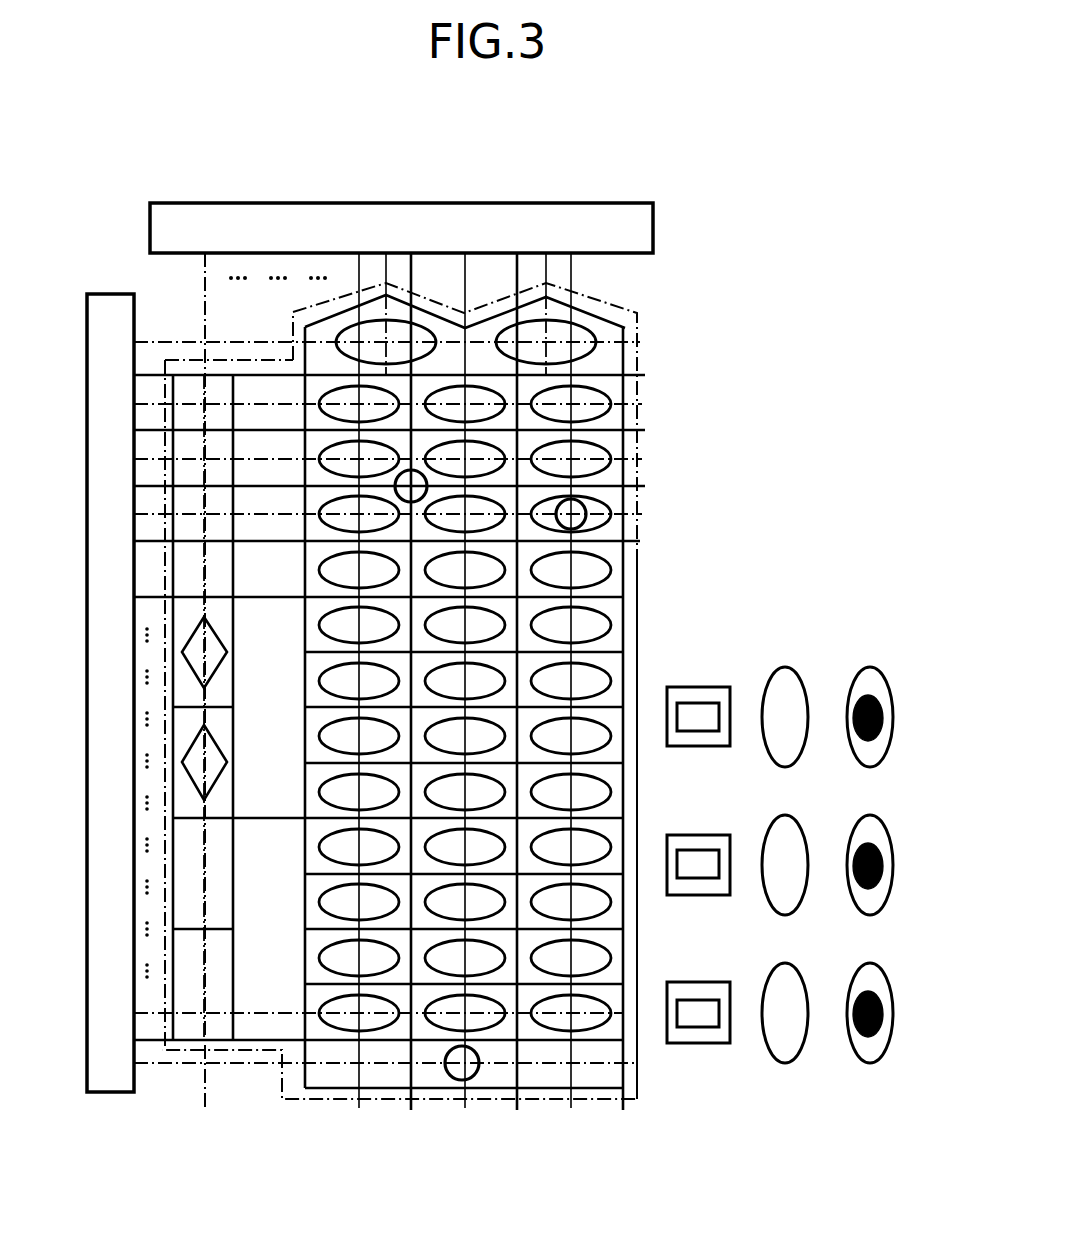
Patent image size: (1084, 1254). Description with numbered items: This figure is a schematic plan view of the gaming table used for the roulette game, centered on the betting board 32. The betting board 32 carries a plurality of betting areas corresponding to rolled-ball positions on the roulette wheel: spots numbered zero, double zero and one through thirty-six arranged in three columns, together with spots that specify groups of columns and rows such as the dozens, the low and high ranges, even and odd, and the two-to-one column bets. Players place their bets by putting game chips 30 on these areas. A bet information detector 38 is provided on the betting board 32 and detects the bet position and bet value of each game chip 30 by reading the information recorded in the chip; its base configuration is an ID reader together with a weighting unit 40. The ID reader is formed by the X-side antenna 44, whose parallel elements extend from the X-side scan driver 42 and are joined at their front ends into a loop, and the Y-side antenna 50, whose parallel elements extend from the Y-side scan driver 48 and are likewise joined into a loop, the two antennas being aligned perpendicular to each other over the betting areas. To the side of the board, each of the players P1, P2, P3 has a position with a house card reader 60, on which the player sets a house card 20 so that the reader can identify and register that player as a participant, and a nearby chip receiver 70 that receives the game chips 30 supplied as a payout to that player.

The house card 20 is at (700, 703).
The game chips 30 is at (588, 522).
The betting board 32 is at (655, 470).
The bet information detector 38 is at (732, 313).
The weighting unit 40 is at (637, 640).
The X-side scan driver 42 is at (110, 1092).
The X-side antenna 44 is at (640, 342).
The Y-side scan driver 48 is at (400, 203).
The Y-side antenna 50 is at (205, 274).
The house card reader 60 is at (727, 687).
The chip receiver 70 is at (805, 685).
The player P1 is at (888, 675).
The player P2 is at (888, 823).
The player P3 is at (888, 971).